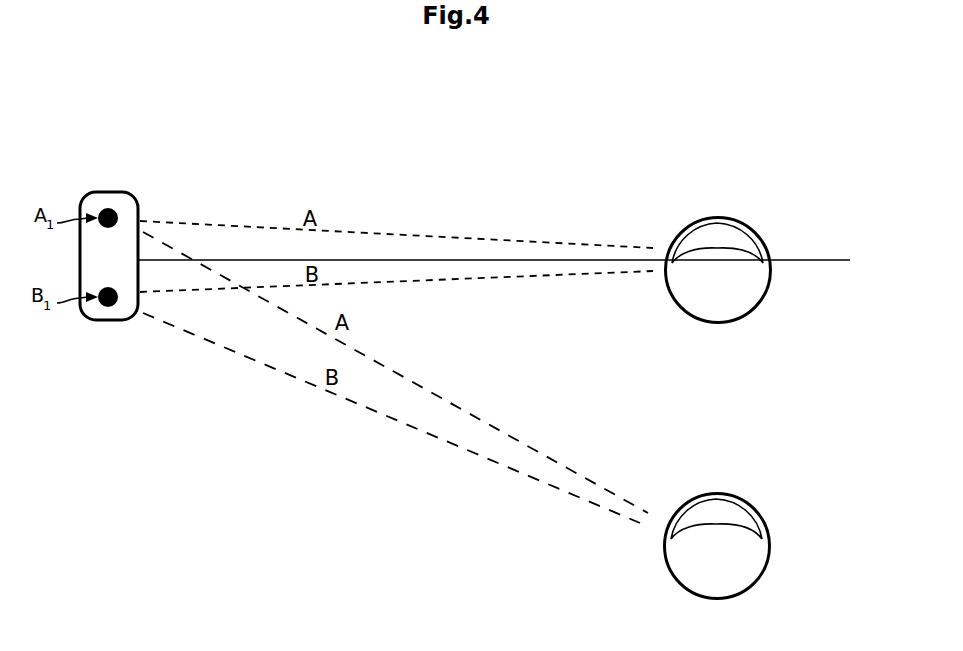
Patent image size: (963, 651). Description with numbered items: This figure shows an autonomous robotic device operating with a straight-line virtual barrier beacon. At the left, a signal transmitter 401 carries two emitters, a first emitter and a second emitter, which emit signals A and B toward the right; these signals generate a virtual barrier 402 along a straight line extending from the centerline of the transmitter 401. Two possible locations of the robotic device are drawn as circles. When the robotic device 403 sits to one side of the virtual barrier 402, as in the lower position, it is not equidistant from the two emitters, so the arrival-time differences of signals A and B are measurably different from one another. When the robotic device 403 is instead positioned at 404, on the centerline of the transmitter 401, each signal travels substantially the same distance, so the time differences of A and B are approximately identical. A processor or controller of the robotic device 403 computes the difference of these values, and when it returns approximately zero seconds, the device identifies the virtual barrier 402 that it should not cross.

The signal transmitter 401 is at (109, 236).
The virtual barrier 402 is at (516, 262).
The robotic device 403 is at (717, 530).
The position on the centerline of the transmitter 404 is at (718, 255).